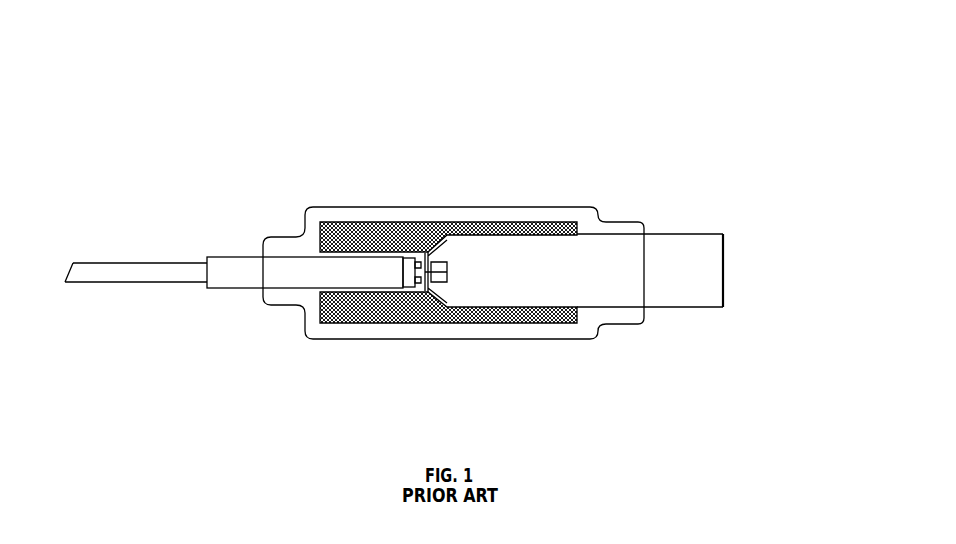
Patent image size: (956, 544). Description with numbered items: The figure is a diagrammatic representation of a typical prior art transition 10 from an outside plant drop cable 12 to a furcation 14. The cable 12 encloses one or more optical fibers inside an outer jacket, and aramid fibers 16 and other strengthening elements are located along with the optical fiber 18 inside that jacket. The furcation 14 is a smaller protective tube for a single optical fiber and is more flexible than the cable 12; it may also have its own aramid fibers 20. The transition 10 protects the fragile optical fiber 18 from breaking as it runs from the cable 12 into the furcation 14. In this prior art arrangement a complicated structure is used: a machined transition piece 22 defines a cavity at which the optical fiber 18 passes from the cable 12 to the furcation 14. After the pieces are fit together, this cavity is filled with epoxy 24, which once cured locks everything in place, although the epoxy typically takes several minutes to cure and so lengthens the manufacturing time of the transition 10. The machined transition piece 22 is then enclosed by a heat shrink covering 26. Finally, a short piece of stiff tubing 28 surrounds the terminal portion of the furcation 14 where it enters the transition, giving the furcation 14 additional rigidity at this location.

The transition 10 is at (540, 142).
The OSP drop cable 12 is at (682, 233).
The furcation 14 is at (110, 262).
The aramid fibers 16 is at (439, 250).
The optical fiber 18 is at (424, 292).
The aramid fibers 20 is at (426, 258).
The machined transition piece 22 is at (353, 227).
The epoxy 24 is at (411, 288).
The heat shrink covering 26 is at (557, 338).
The stiff tubing 28 is at (227, 275).